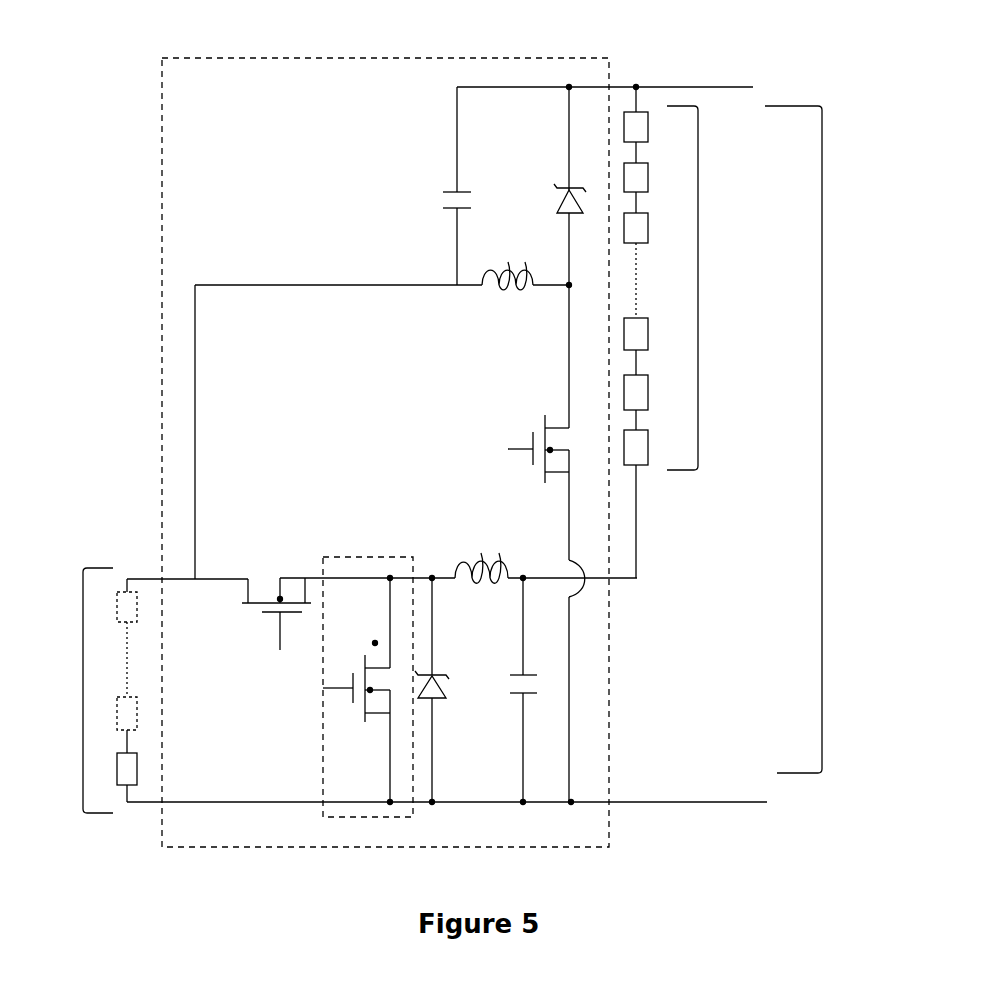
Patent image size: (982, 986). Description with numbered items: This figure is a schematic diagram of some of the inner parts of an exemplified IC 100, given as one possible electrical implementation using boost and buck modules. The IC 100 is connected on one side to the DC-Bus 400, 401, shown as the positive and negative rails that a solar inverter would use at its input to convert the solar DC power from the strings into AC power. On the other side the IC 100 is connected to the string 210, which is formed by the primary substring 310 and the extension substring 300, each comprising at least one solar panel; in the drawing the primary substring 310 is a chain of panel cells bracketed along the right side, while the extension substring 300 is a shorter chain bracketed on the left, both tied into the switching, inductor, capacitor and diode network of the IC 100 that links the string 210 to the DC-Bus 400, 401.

The IC 100 is at (158, 203).
The string 210 is at (822, 440).
The extension substring 300 is at (83, 688).
The primary substring 310 is at (698, 293).
The DC-Bus 400 is at (690, 82).
The DC-Bus 401 is at (703, 807).